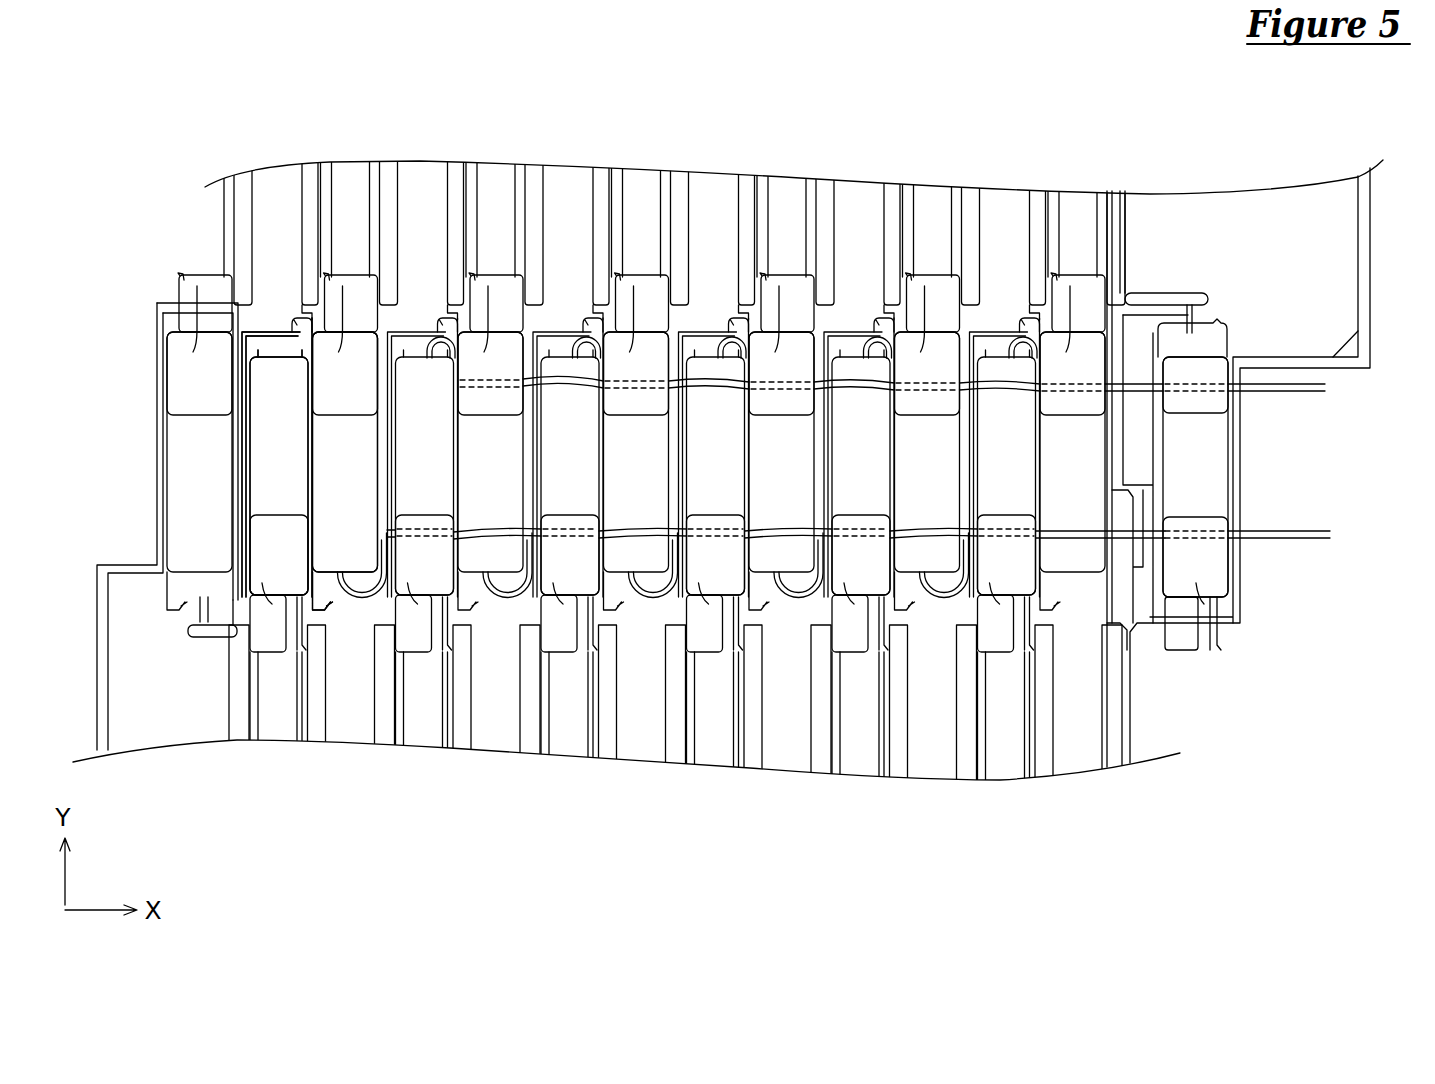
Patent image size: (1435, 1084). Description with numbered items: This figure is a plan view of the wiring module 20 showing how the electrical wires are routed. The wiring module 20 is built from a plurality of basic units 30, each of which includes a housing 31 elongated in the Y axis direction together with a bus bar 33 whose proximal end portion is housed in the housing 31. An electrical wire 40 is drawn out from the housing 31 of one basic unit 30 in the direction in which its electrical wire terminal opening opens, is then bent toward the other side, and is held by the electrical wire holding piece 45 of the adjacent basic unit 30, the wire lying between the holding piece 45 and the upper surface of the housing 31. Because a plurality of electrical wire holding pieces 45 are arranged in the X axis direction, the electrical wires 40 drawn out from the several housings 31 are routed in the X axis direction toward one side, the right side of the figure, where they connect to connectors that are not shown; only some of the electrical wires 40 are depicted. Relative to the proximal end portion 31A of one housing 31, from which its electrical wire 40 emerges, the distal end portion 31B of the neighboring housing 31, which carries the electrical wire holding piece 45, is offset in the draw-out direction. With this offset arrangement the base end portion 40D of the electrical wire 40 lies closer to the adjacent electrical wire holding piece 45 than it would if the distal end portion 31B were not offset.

The wiring module 20 is at (1185, 719).
The basic unit 30 is at (333, 535).
The housing 31 is at (347, 487).
The proximal end portion 31A is at (718, 350).
The distal end portion 31B is at (800, 350).
The bus bar 33 is at (422, 188).
The electrical wire 40 is at (430, 335).
The base end portion 40D is at (721, 330).
The electrical wire holding piece 45 is at (357, 357).